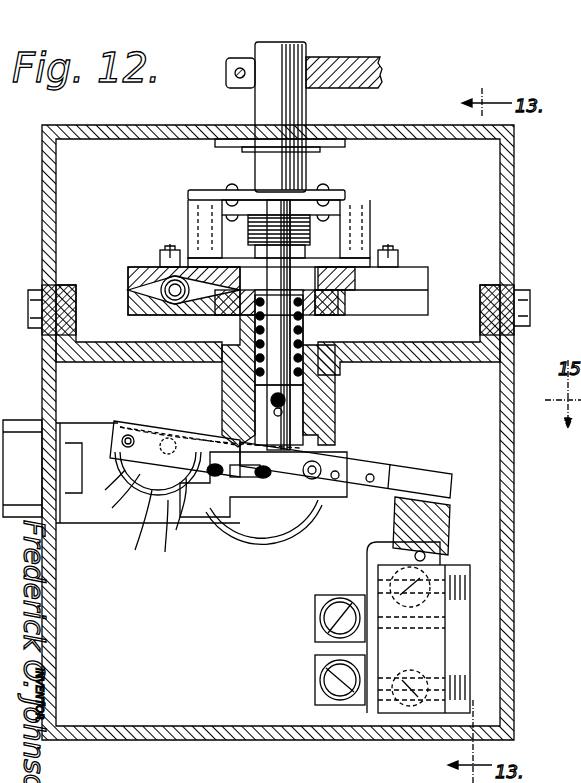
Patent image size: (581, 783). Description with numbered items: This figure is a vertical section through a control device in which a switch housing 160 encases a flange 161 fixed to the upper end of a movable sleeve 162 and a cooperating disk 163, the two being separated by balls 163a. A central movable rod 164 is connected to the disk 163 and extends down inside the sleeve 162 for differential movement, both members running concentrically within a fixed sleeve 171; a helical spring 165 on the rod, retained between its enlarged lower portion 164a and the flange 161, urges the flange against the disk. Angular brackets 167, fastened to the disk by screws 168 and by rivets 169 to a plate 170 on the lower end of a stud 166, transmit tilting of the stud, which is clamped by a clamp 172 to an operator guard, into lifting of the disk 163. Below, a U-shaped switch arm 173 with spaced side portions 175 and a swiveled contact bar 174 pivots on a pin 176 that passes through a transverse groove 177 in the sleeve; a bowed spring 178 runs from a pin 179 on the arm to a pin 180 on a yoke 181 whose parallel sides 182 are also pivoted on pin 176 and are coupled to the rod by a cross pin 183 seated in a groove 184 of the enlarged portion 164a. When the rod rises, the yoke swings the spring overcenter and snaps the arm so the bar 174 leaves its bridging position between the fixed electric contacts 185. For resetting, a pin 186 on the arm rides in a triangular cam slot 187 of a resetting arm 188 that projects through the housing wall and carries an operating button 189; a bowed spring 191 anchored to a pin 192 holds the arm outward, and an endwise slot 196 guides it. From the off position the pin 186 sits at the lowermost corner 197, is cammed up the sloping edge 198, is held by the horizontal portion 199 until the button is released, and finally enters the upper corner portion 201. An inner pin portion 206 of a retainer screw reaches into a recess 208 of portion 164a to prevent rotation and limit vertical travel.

The switch housing 160 is at (512, 250).
The flange 161 is at (415, 300).
The movable sleeve 162 is at (318, 330).
The disk 163 is at (420, 272).
The balls 163a is at (165, 282).
The movable rod 164 is at (340, 282).
The enlarged lower portion 164a is at (320, 428).
The helical spring 165 is at (238, 325).
The stud 166 is at (305, 48).
The angular brackets 167 is at (190, 232).
The screws 168 is at (390, 248).
The rivets 169 is at (232, 188).
The plate 170 is at (335, 207).
The fixed sleeve 171 is at (215, 372).
The clamp 172 is at (360, 60).
The U-shaped switch arm 173 is at (380, 465).
The contact bar 174 is at (448, 522).
The side portions 175 is at (150, 430).
The pin 176 is at (370, 482).
The transverse groove 177 is at (350, 456).
The bowed spring 178 is at (178, 513).
The pin 179 is at (128, 435).
The pin 180 is at (215, 478).
The yoke 181 is at (245, 480).
The side portions 182 is at (263, 480).
The cross pin 183 is at (312, 480).
The transverse groove 184 is at (274, 405).
The fixed electric contacts 185 is at (425, 556).
The pin 186 is at (200, 432).
The cam slot 187 is at (132, 530).
The resetting arm 188 is at (80, 523).
The operating button 189 is at (18, 418).
The bowed spring 191 is at (292, 530).
The pin 192 is at (158, 473).
The endwise slot 196 is at (338, 479).
The lowermost corner 197 is at (172, 535).
The sloping cam edge 198 is at (116, 496).
The straight horizontal portion 199 is at (103, 484).
The upper corner portion 201 is at (184, 452).
The inner pin portion 206 is at (330, 392).
The recess 208 is at (330, 410).